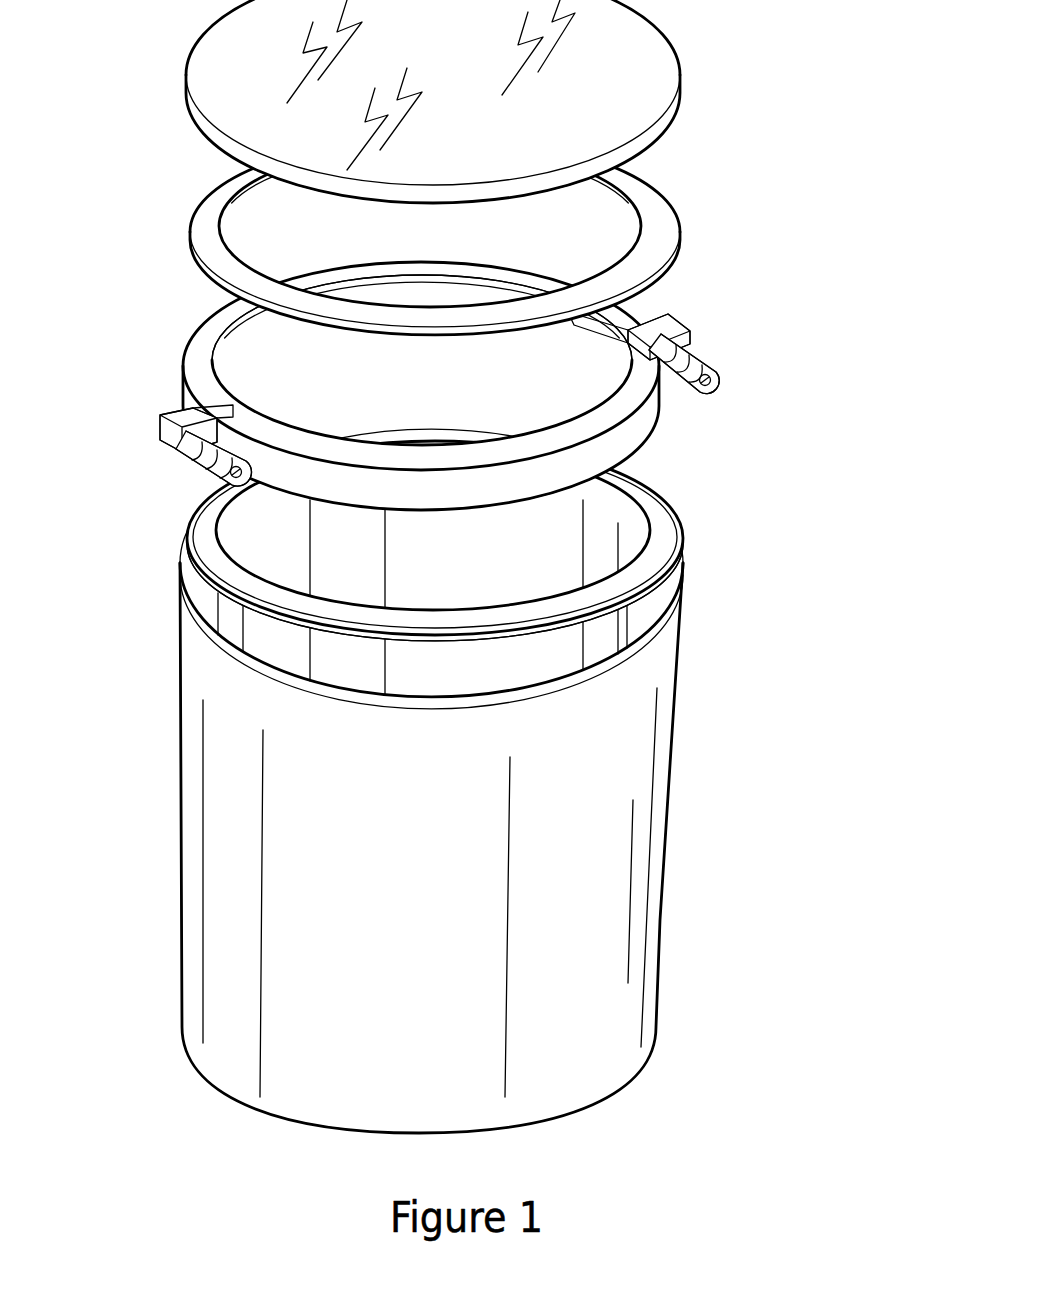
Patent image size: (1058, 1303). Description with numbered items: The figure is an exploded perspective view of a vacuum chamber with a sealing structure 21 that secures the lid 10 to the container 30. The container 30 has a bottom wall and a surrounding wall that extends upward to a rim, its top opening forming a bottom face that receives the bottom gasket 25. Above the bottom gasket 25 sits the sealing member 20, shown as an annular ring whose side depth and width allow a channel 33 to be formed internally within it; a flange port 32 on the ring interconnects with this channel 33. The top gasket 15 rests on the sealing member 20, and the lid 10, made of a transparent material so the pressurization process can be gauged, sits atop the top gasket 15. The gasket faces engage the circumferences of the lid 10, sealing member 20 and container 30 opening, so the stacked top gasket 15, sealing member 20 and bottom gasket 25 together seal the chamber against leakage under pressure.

The lid 10 is at (650, 59).
The top gasket 15 is at (647, 228).
The sealing member 20 is at (640, 422).
The sealing structure 21 is at (472, 404).
The bottom gasket 25 is at (645, 572).
The container 30 is at (653, 910).
The flange port 32 is at (193, 455).
The channel 33 is at (193, 407).